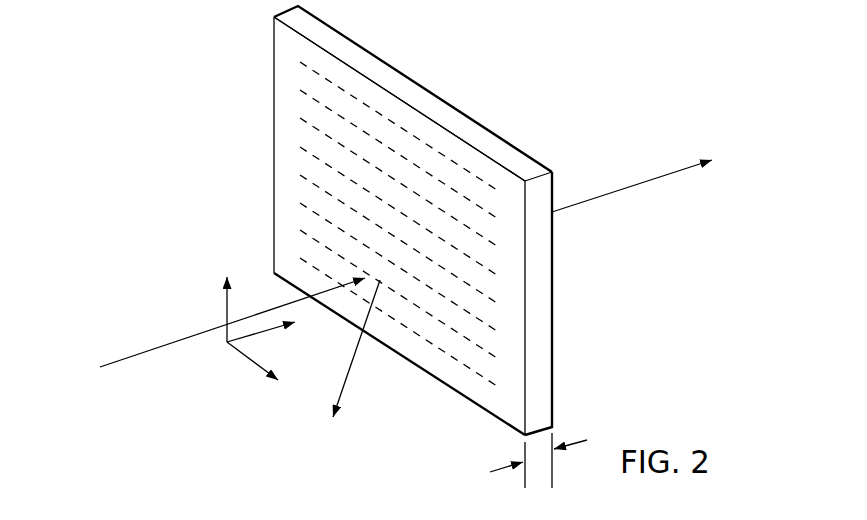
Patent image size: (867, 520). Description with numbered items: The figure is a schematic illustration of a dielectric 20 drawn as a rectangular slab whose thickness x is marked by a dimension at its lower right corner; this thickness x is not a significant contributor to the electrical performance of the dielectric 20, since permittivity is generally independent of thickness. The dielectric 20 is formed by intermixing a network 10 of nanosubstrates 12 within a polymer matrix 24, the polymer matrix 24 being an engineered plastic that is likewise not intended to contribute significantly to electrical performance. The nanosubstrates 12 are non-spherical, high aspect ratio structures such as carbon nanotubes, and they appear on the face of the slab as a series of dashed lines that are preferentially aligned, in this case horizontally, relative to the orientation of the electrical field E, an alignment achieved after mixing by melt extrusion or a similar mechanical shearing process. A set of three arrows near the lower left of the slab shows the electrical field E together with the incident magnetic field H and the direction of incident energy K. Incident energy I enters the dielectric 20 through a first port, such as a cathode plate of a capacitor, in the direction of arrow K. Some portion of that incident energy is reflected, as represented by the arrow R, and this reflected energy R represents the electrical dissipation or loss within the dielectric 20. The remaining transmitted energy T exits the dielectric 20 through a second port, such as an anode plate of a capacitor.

The dielectric 20 is at (494, 80).
The network 10 is at (287, 177).
The nanosubstrates 12 is at (303, 91).
The polymer matrix 24 is at (288, 48).
The incident energy I is at (175, 340).
The reflected energy R is at (350, 373).
The transmitted energy T is at (617, 192).
The electrical field E is at (224, 296).
The incident energy direction K is at (271, 325).
The incident magnetic field H is at (265, 371).
The thickness x is at (538, 460).